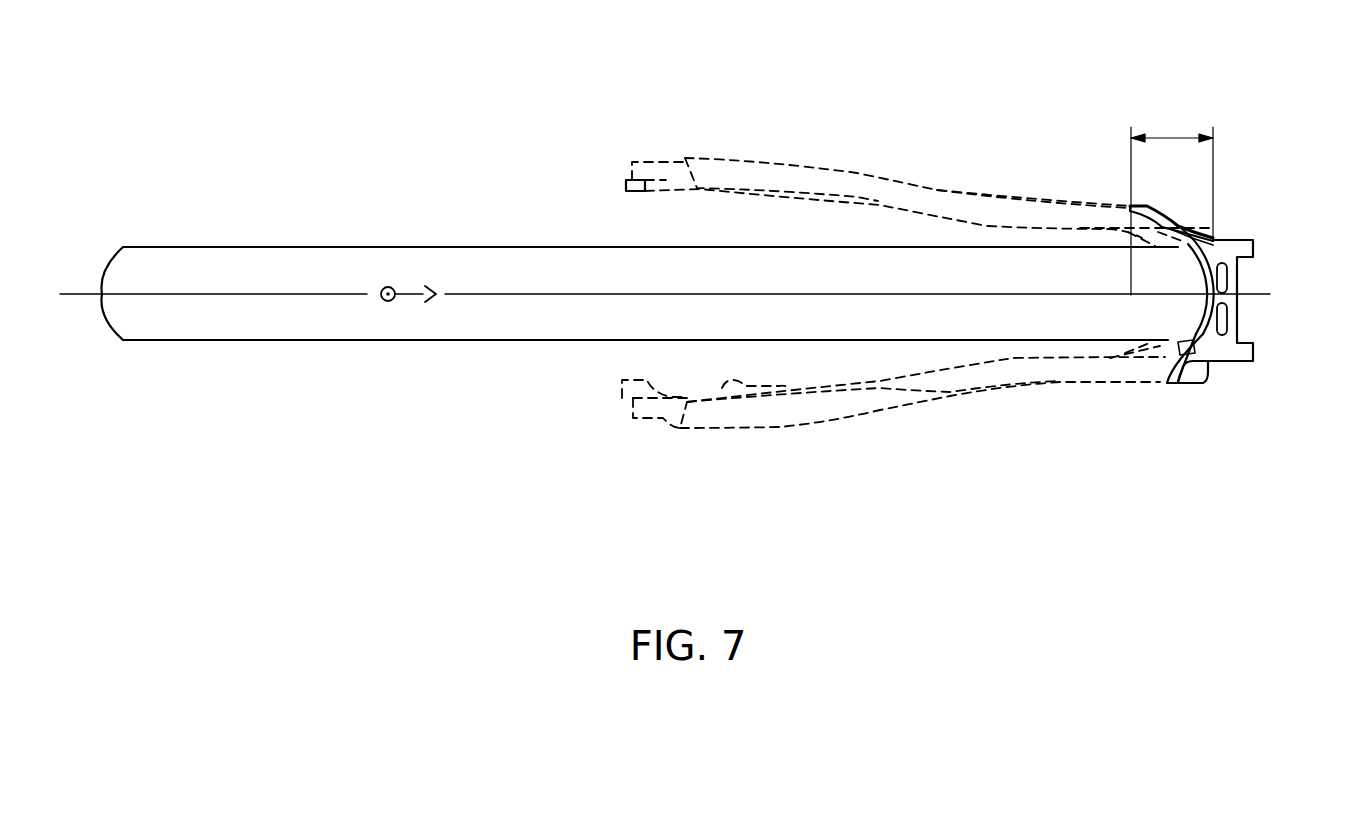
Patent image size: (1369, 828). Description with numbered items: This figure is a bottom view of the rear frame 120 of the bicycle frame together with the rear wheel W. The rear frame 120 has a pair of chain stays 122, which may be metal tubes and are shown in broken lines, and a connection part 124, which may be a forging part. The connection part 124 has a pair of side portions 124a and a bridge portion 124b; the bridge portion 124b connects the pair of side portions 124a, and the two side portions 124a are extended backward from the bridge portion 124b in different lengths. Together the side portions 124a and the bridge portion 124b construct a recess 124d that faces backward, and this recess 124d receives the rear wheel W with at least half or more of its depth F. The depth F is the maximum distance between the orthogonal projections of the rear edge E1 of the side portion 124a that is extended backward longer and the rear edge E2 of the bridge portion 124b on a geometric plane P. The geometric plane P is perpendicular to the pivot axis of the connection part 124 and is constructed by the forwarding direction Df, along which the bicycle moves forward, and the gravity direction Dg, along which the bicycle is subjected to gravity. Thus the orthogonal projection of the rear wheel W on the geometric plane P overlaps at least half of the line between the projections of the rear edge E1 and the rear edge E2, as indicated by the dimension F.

The rear frame 120 is at (671, 118).
The chain stays 122 is at (857, 176).
The connection part 124 is at (1226, 302).
The side portions 124a is at (1183, 224).
The bridge portion 124b is at (1213, 298).
The recess 124d is at (1186, 318).
The forwarding direction Df is at (433, 279).
The gravity direction Dg is at (388, 301).
The rear edge of the side portion E1 is at (1130, 207).
The rear edge of the bridge portion E2 is at (1207, 295).
The depth of the recess F is at (1172, 199).
The geometric plane P is at (1265, 294).
The rear wheel W is at (935, 328).